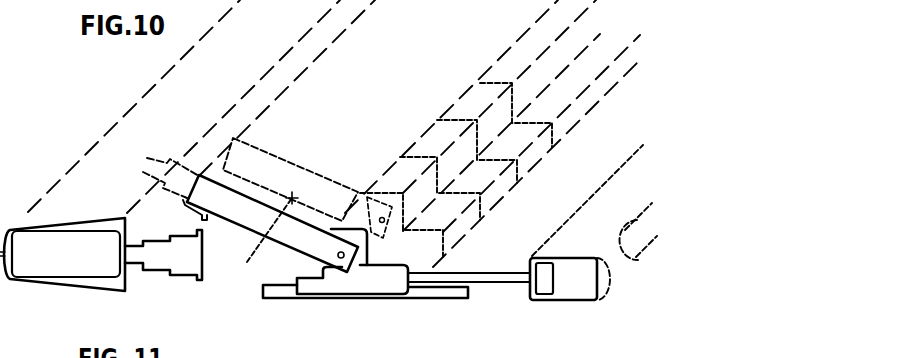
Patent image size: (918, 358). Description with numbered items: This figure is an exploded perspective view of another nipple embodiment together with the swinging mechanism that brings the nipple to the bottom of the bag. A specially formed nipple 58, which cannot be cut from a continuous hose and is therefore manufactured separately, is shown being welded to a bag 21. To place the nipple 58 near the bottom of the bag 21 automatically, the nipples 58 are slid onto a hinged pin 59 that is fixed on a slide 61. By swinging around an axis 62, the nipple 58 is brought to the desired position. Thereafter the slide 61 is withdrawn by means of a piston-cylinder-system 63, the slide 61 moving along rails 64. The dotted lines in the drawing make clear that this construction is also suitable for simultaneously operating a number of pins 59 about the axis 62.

The bag 21 is at (60, 291).
The nipple 58 is at (182, 265).
The hinged pin 59 is at (255, 232).
The slide 61 is at (387, 272).
The axis 62 is at (341, 258).
The piston-cylinder-system 63 is at (575, 290).
The rails 64 is at (446, 289).